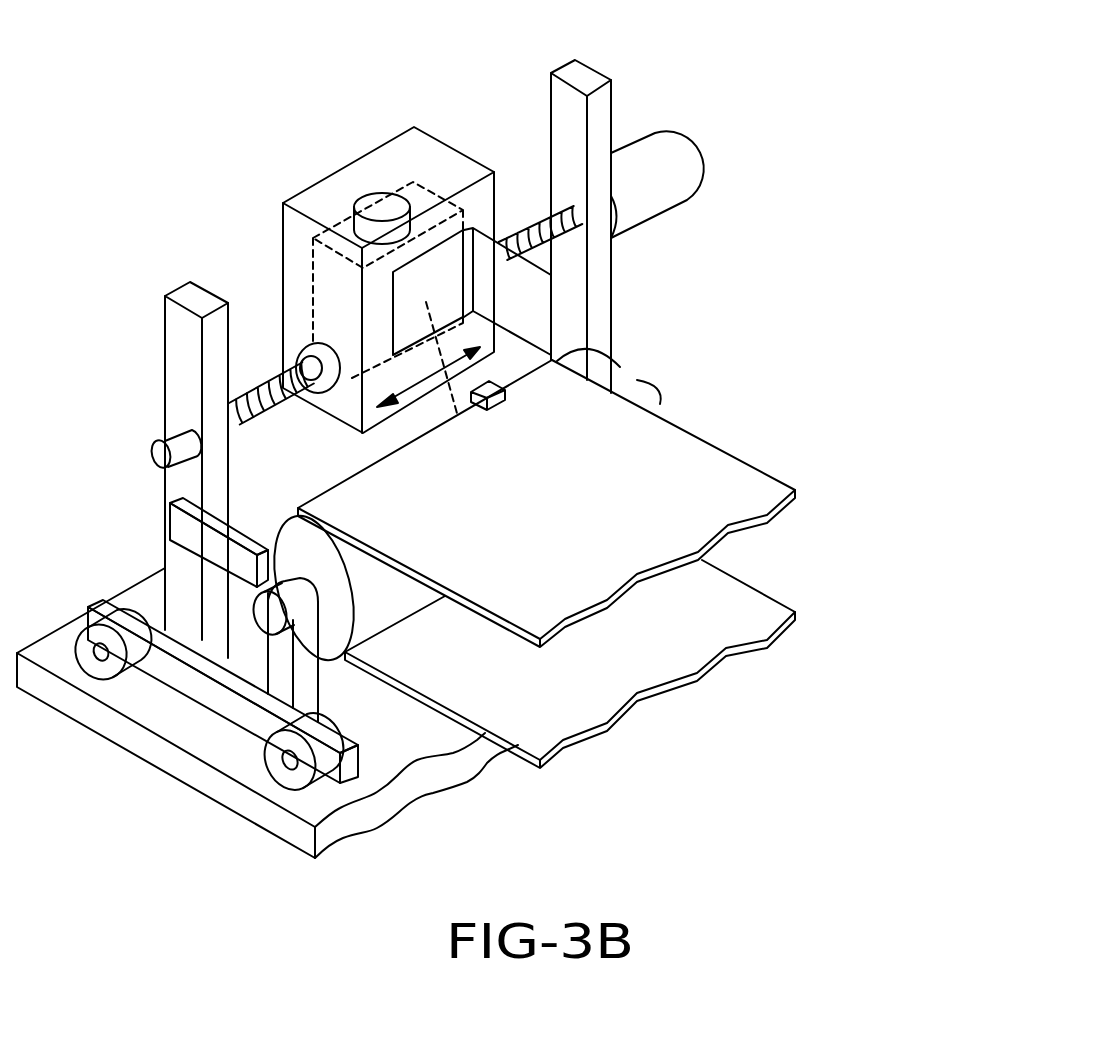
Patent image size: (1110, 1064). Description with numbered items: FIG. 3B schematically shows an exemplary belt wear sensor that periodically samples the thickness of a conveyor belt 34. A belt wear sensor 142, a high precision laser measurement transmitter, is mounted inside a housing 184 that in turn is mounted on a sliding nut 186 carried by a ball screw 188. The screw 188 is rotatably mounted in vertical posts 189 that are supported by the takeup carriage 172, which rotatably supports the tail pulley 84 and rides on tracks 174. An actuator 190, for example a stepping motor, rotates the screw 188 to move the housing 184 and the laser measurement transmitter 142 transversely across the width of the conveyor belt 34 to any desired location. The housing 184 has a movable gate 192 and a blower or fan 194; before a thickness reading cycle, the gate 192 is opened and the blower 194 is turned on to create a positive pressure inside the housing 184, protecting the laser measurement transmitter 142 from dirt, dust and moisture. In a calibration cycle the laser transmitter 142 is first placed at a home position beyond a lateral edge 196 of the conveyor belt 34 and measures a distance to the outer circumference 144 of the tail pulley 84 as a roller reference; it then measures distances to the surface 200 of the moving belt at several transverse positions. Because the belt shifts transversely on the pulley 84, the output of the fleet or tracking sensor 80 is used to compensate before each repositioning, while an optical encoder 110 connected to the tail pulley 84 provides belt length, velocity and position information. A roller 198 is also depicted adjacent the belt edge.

The conveyor belt 34 is at (572, 564).
The fleet or tracking sensor 80 is at (230, 555).
The tail pulley 84 is at (373, 603).
The optical encoder 110 is at (257, 613).
The belt wear sensor (laser measurement transmitter) 142 is at (322, 273).
The outer circumference of the tail pulley 144 is at (648, 340).
The takeup carriage 172 is at (98, 598).
The tracks 174 is at (228, 790).
The housing 184 is at (338, 239).
The sliding nut 186 is at (333, 375).
The ball screw 188 is at (537, 232).
The vertical posts 189 is at (179, 295).
The actuator (stepping motor) 190 is at (656, 198).
The movable gate 192 is at (531, 300).
The blower or fan 194 is at (377, 207).
The lateral edge of the conveyor belt 196 is at (572, 564).
The pressure roller 198 is at (620, 368).
The surface of the conveyor belt 200 is at (530, 503).